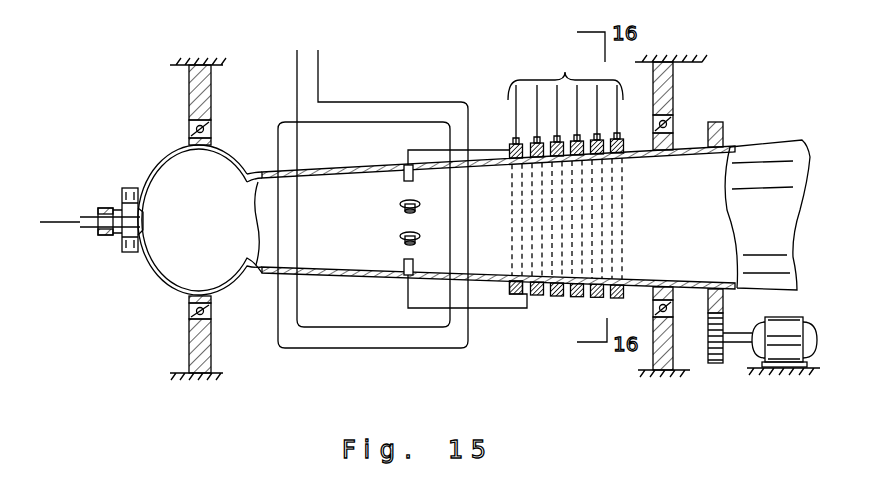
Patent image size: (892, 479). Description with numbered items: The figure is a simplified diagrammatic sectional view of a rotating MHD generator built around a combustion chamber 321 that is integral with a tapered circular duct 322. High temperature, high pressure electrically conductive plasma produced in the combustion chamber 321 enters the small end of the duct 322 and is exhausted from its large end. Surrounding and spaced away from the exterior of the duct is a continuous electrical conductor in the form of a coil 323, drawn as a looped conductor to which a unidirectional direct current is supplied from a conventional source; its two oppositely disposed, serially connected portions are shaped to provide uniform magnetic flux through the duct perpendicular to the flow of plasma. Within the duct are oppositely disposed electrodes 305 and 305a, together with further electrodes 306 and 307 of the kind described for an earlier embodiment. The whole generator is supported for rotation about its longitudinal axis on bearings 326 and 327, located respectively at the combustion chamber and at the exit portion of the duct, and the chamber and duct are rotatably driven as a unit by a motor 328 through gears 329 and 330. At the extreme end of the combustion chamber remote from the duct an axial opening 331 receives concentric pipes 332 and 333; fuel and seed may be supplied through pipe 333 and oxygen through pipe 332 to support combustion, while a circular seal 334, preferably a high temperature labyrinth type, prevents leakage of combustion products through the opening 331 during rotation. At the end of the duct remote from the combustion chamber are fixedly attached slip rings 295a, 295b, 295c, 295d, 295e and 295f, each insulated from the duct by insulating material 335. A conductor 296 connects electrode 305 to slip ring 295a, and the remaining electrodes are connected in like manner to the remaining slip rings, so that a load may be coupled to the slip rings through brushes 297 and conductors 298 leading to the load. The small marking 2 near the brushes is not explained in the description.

The combustion chamber 321 is at (206, 188).
The tapered circular duct 322 is at (315, 173).
The coil 323 is at (357, 102).
The bearing 326 is at (189, 313).
The bearing 327 is at (668, 126).
The motor 328 is at (797, 313).
The gear 329 is at (709, 364).
The gear 330 is at (724, 311).
The axial opening 331 is at (144, 217).
The pipe 332 is at (77, 224).
The pipe 333 is at (110, 209).
The circular seal 334 is at (131, 253).
The insulating material 335 is at (512, 284).
The conductor 296 is at (472, 152).
The brushes 297 is at (619, 129).
The conductors 298 is at (617, 86).
The lead 2 is at (627, 123).
The electrode 305 is at (403, 174).
The electrode 305a is at (403, 271).
The electrode 306 is at (404, 209).
The electrode 307 is at (404, 240).
The slip ring 295a is at (515, 296).
The slip ring 295b is at (538, 297).
The slip ring 295c is at (559, 294).
The slip ring 295d is at (583, 284).
The slip ring 295e is at (604, 284).
The slip ring 295f is at (619, 298).